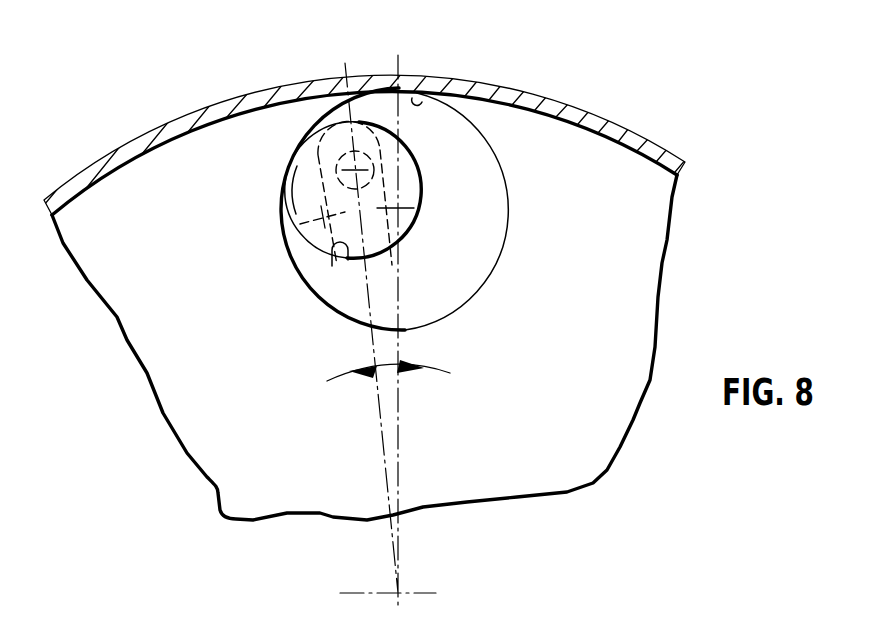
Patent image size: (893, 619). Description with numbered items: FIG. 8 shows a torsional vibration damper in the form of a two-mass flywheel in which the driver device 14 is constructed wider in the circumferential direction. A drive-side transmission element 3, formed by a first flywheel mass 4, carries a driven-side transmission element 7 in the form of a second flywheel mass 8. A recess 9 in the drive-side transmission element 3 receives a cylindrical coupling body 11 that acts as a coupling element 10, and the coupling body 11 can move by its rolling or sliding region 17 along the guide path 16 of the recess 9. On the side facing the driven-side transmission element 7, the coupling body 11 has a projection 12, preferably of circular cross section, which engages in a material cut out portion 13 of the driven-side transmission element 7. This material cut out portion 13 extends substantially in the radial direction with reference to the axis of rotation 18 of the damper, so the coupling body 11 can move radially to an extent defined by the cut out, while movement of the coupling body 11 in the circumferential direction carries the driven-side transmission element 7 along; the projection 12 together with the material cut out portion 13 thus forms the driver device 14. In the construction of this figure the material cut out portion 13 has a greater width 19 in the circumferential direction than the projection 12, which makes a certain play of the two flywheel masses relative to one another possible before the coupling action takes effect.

The drive-side transmission element 3 is at (115, 330).
The first flywheel mass 4 is at (143, 188).
The driven-side transmission element 7 is at (426, 231).
The second flywheel mass 8 is at (445, 302).
The recess 9 is at (503, 160).
The coupling element 10 is at (427, 181).
The coupling body 11 is at (298, 205).
The projection 12 is at (303, 160).
The material cut out portion 13 is at (313, 250).
The driver device 14 is at (338, 299).
The guide path 16 is at (420, 98).
The rolling or sliding region 17 is at (413, 150).
The axis of rotation 18 is at (400, 592).
The width 19 is at (297, 228).